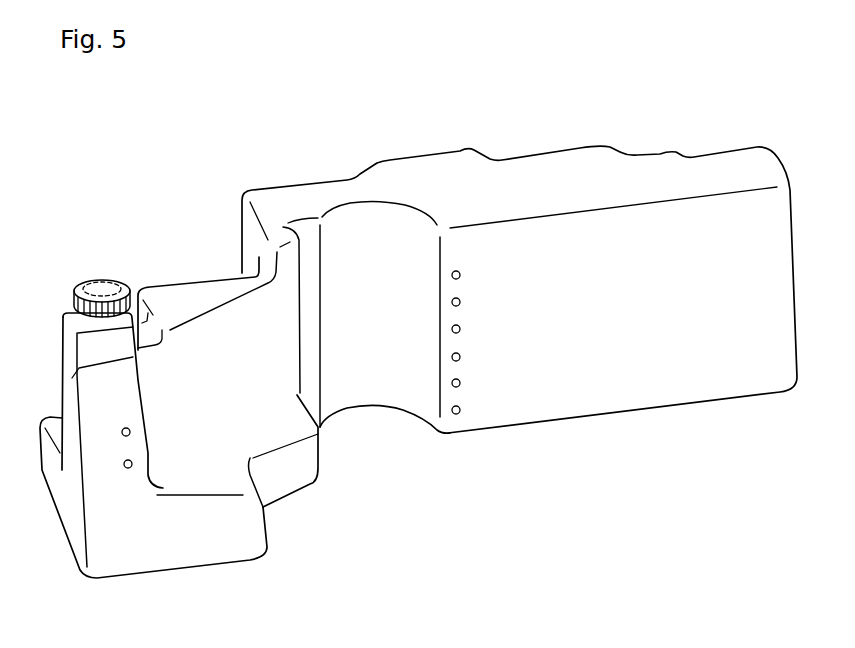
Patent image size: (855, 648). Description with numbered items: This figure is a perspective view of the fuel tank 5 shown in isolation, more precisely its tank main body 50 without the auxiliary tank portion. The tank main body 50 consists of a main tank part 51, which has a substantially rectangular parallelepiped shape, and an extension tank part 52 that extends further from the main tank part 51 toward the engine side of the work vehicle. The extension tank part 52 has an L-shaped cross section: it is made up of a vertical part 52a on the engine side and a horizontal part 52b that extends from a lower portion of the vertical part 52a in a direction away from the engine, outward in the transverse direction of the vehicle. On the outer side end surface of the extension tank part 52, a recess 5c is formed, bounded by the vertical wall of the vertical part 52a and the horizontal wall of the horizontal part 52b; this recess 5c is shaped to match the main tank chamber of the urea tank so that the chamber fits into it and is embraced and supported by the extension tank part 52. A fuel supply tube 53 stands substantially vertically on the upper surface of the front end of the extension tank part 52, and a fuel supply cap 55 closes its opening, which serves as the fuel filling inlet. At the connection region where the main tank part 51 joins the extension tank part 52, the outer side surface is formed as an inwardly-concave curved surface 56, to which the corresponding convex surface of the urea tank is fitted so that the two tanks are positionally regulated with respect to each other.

The fuel tank 5 is at (230, 163).
The tank main body 50 is at (418, 380).
The main tank part 51 is at (727, 400).
The extension tank part 52 is at (63, 343).
The vertical part 52a is at (197, 292).
The horizontal part 52b is at (182, 550).
The fuel supply tube 53 is at (113, 281).
The fuel supply cap 55 is at (91, 282).
The inwardly-concave curved surface 56 is at (377, 377).
The recess 5c is at (270, 427).